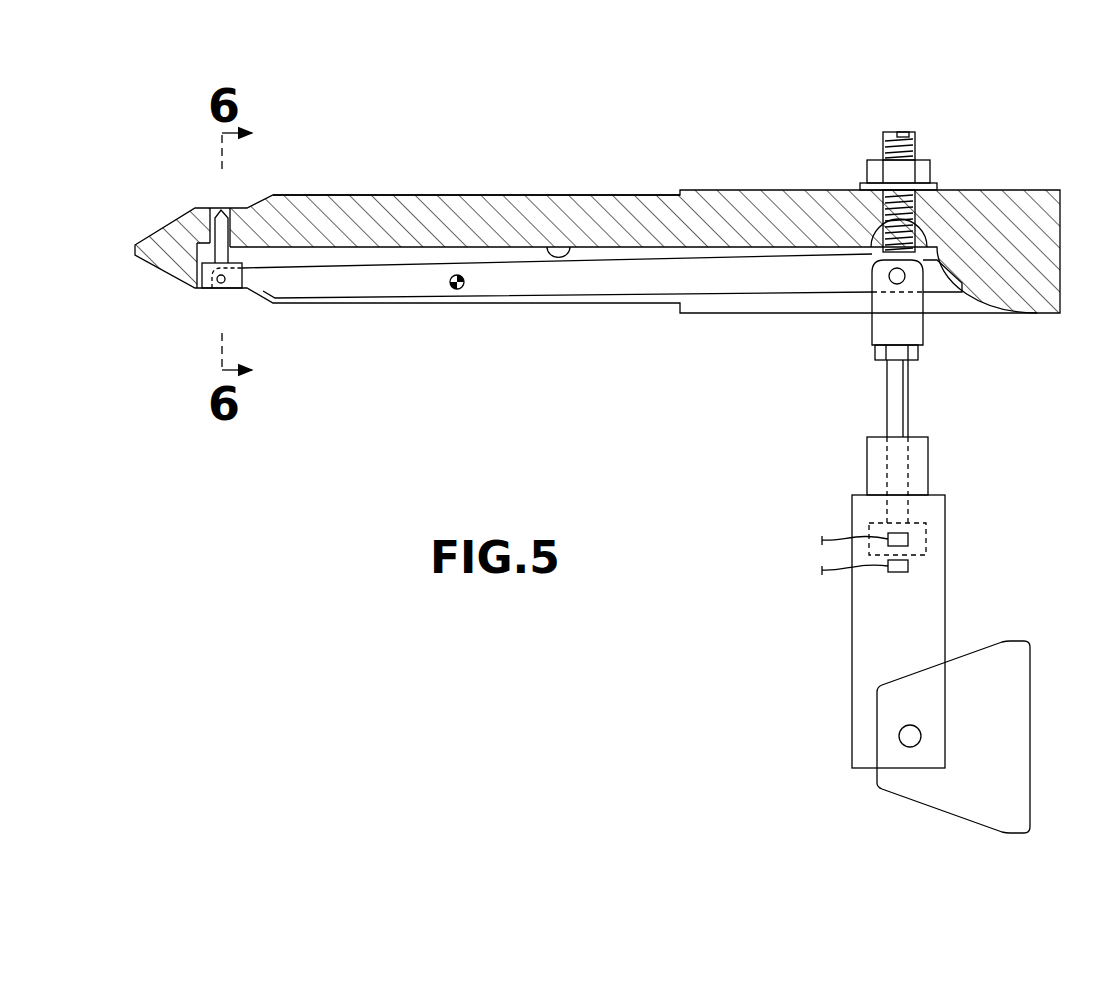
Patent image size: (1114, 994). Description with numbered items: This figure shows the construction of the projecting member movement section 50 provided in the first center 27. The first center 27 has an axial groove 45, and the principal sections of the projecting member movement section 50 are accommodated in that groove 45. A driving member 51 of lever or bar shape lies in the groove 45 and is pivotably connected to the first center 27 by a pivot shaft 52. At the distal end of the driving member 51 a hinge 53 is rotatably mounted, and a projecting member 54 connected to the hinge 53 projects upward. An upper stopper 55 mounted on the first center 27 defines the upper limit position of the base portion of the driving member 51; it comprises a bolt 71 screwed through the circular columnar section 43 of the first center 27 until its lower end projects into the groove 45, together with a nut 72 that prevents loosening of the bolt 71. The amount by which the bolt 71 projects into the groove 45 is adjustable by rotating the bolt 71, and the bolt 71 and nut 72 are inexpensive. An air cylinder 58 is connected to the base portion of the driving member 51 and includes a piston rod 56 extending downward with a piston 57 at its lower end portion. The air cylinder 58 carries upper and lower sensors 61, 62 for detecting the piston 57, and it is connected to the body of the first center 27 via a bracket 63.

The first center 27 is at (467, 185).
The circular columnar section 43 is at (650, 215).
The axial groove 45 is at (570, 243).
The projecting member movement section 50 is at (839, 552).
The driving member 51 is at (565, 283).
The pivot shaft 52 is at (458, 290).
The hinge 53 is at (217, 287).
The projecting member 54 is at (217, 237).
The upper stopper 55 is at (980, 159).
The piston rod 56 is at (892, 405).
The piston 57 is at (926, 540).
The air cylinder 58 is at (876, 650).
The upper sensor 61 is at (910, 537).
The lower sensor 62 is at (910, 566).
The bracket 63 is at (942, 790).
The bolt 71 is at (917, 136).
The nut 72 is at (923, 170).